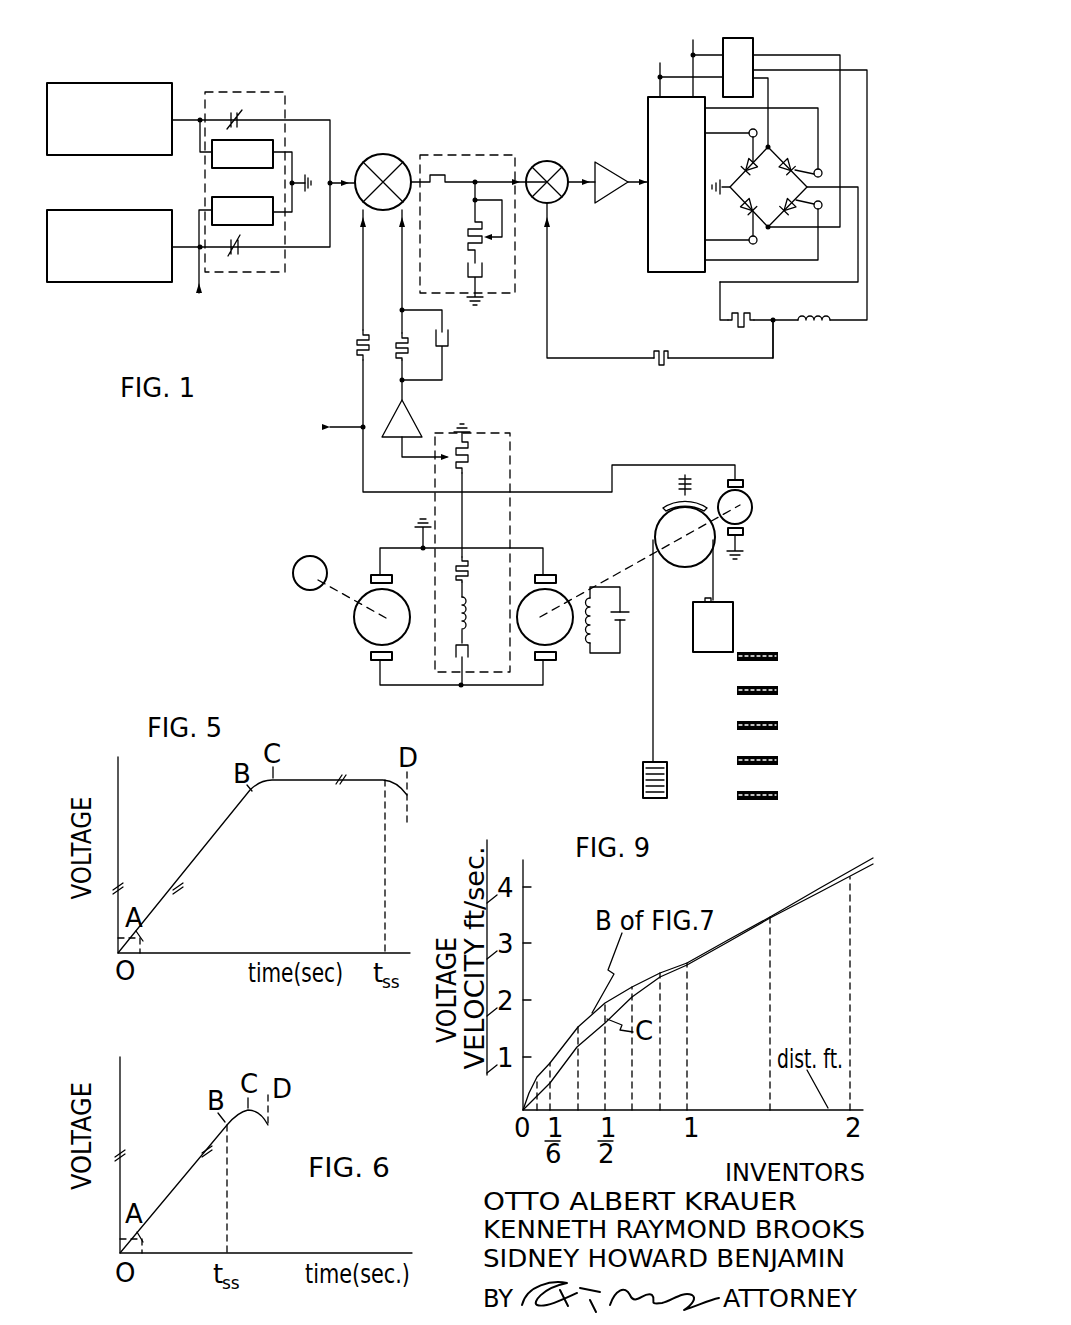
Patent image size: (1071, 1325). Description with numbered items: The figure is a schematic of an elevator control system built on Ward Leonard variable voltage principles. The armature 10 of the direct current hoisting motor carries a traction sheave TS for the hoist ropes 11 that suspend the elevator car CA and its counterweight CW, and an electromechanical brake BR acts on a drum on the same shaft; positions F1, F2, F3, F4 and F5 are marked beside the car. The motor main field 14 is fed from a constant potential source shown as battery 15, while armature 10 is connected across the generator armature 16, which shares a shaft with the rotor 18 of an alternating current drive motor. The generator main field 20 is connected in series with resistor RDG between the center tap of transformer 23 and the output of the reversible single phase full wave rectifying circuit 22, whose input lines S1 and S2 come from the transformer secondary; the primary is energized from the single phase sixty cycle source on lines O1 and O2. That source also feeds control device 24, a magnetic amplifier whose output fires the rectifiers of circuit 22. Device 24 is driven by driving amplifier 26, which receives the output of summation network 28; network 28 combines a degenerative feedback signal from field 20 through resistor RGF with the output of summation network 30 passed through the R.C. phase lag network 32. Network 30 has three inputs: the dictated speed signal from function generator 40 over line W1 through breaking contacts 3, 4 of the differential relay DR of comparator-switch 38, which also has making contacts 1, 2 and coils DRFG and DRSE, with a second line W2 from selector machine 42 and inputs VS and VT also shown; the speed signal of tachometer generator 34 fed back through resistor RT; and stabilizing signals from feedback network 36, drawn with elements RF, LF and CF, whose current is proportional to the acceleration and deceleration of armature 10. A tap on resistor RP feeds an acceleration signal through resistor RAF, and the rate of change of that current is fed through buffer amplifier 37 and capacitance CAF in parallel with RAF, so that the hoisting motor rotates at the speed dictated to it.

The armature 10 is at (557, 643).
The hoist ropes 11 is at (712, 578).
The main field 14 is at (598, 597).
The battery 15 is at (627, 621).
The generator armature 16 is at (357, 635).
The rotor 18 is at (296, 560).
The generator main field 20 is at (816, 326).
The reversible single phase full wave rectifying circuit 22 is at (808, 149).
The transformer 23 is at (753, 46).
The control device 24 is at (646, 205).
The driving amplifier 26 is at (615, 169).
The summation network 28 is at (545, 161).
The summation network 30 is at (380, 155).
The R.C. stabilizing phase lag network 32 is at (453, 155).
The tachometer generator 34 is at (760, 515).
The feedback network 36 is at (510, 521).
The isolating amplifier or buffer 37 is at (395, 419).
The comparator-switch 38 is at (287, 103).
The function generator 40 is at (120, 163).
The selector machine 42 is at (113, 298).
The making contact 1 is at (220, 254).
The making contact 2 is at (249, 257).
The breaking contact 3 is at (213, 107).
The breaking contact 4 is at (251, 107).
The differential relay DR is at (233, 109).
The differential relay coil DRFG is at (242, 154).
The differential relay coil DRSE is at (242, 211).
The line W1 is at (190, 113).
The wire W2 is at (188, 237).
The velocity signal input VS is at (198, 291).
The velocity signal input VT is at (322, 425).
The resistor RT is at (357, 345).
The resistor RAF is at (408, 350).
The capacitance CAF is at (448, 346).
The resistor RP is at (468, 467).
The resistor RF is at (468, 577).
The inductor LF is at (483, 611).
The capacitor CF is at (468, 656).
The resistor RGF is at (660, 356).
The resistor RDG is at (749, 306).
The line O1 is at (660, 65).
The line O2 is at (693, 42).
The line S1 is at (769, 96).
The line S2 is at (840, 98).
The traction sheave TS is at (660, 527).
The electromechanical brake BR is at (675, 496).
The elevator car CA is at (733, 623).
The counterweight CW is at (667, 783).
The floor 1 F1 is at (777, 794).
The floor 2 F2 is at (777, 759).
The floor 3 F3 is at (777, 724).
The floor 4 F4 is at (777, 689).
The floor 5 F5 is at (777, 655).